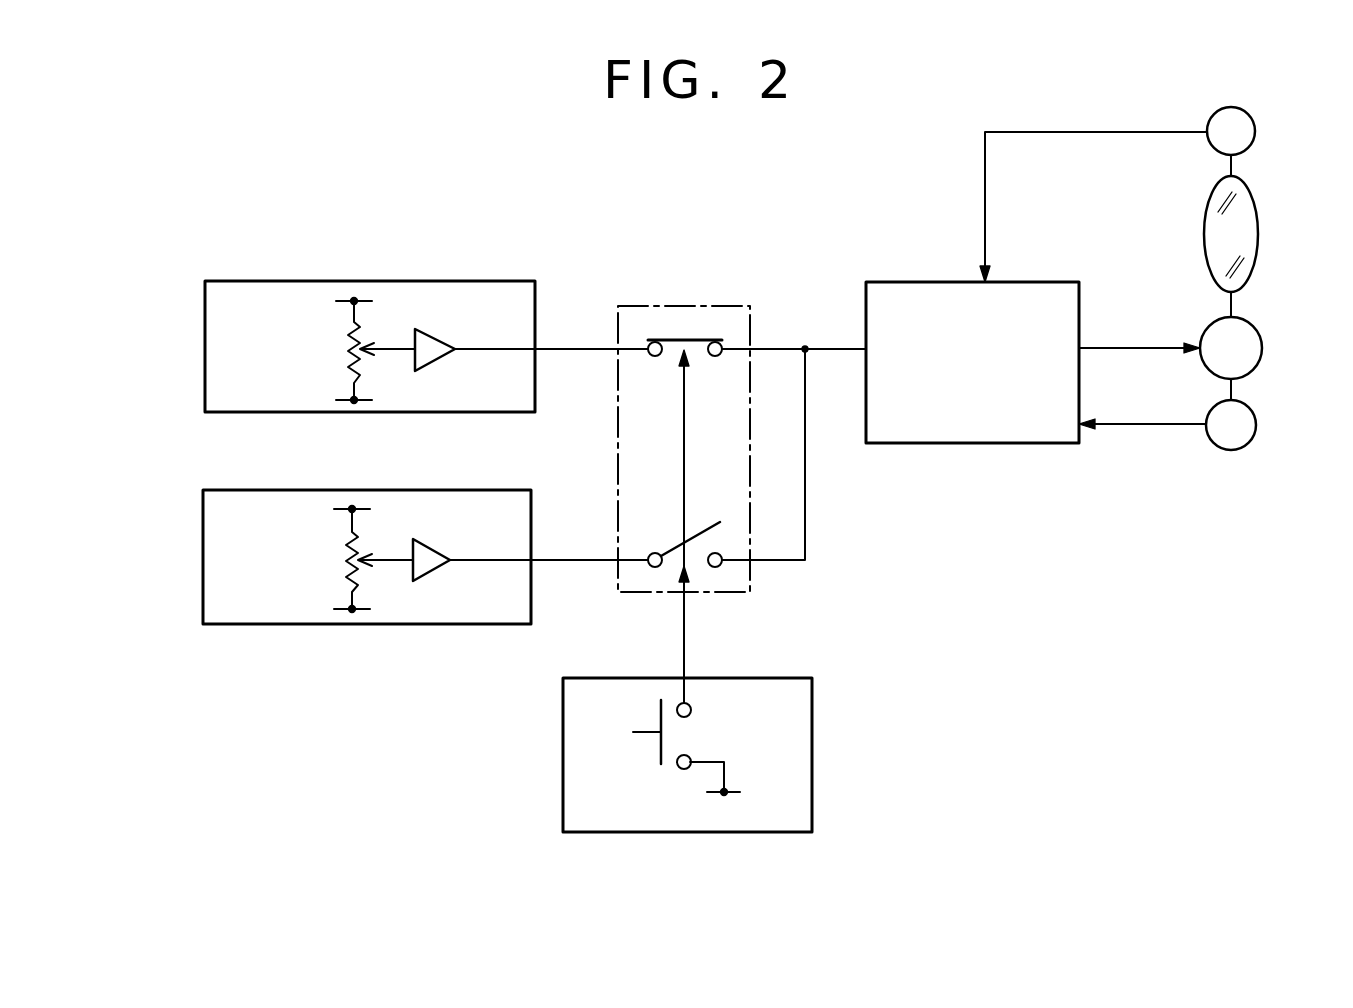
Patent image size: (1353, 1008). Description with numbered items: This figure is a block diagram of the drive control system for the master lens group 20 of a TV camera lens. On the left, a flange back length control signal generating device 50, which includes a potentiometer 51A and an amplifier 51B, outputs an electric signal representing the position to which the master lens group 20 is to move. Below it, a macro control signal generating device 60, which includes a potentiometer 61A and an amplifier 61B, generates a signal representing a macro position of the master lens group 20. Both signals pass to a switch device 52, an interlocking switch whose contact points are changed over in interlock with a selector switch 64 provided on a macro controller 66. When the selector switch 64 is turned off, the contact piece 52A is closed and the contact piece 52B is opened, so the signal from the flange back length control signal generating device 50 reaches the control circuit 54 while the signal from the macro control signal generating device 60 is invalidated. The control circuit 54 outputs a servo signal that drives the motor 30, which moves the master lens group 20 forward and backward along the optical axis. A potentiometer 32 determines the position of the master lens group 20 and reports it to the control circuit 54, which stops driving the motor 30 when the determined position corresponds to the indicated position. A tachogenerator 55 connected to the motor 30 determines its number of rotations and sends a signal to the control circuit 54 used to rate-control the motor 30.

The master lens group 20 is at (1250, 232).
The motor 30 is at (1258, 341).
The potentiometer 32 is at (1255, 131).
The flange back length control signal generating device 50 is at (260, 292).
The potentiometer 51A is at (346, 338).
The amplifier 51B is at (430, 338).
The switch device 52 is at (638, 298).
The contact piece 52A is at (695, 338).
The contact piece 52B is at (685, 545).
The control circuit 54 is at (1000, 443).
The tachogenerator 55 is at (1226, 449).
The macro control signal generating device 60 is at (272, 506).
The potentiometer 61A is at (346, 563).
The amplifier 61B is at (430, 565).
The selector switch 64 is at (670, 767).
The macro controller 66 is at (812, 716).